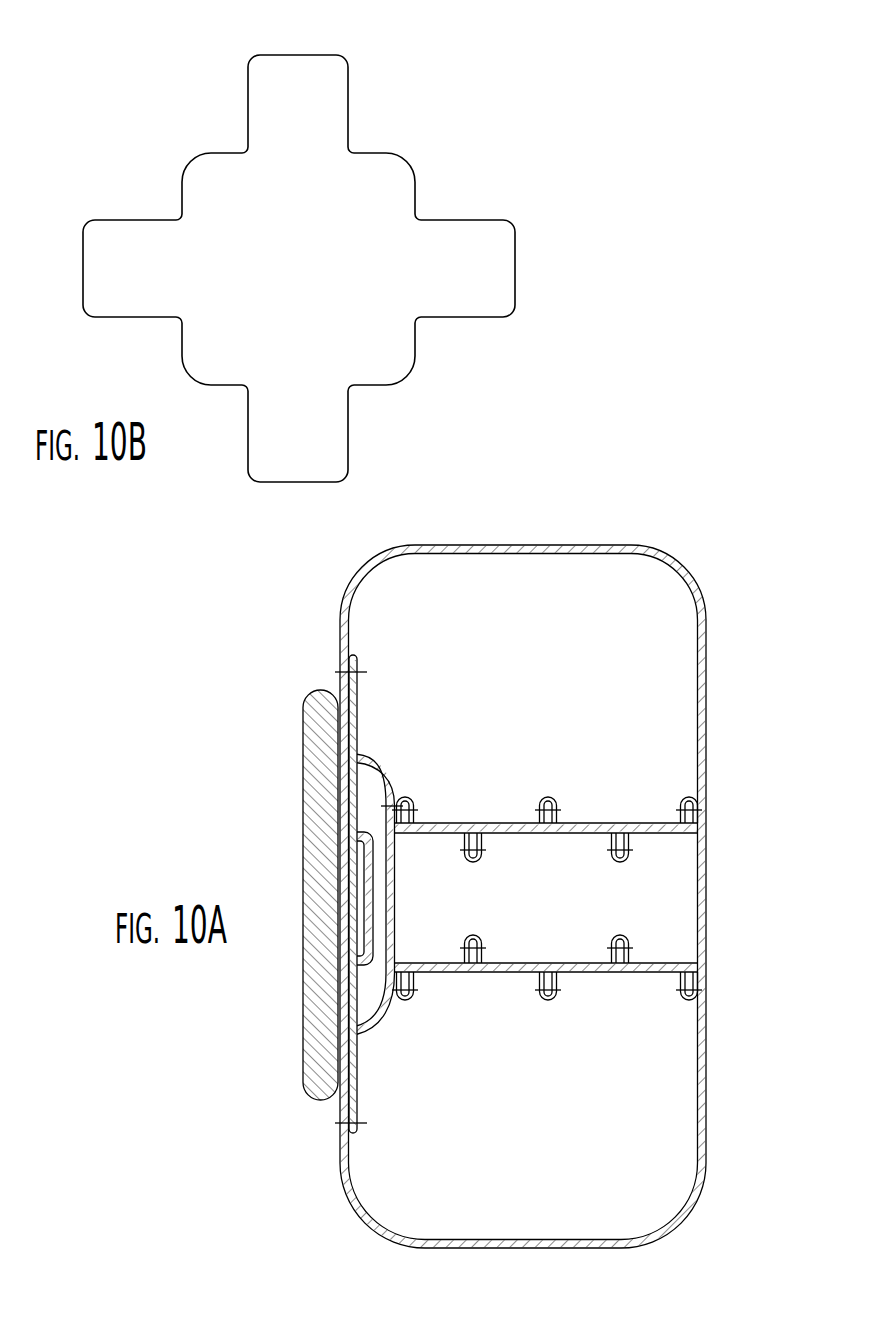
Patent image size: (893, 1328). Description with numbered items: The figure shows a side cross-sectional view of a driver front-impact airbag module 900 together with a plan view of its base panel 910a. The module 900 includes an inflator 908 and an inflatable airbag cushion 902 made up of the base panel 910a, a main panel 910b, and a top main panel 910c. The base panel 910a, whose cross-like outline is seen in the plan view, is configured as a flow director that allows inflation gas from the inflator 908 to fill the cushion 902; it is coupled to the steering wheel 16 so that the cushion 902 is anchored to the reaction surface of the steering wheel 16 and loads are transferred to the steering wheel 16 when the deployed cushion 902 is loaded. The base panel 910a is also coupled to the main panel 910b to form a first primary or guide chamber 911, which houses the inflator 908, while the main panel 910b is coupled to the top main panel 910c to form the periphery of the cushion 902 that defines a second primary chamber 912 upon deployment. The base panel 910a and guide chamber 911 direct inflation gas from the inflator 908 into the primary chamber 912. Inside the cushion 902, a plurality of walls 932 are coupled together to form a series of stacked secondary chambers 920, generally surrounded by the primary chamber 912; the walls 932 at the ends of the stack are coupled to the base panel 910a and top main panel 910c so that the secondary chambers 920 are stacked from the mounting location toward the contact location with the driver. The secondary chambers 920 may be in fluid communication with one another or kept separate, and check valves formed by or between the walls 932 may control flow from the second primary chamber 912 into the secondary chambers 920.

In FIG. 10A, the steering wheel 16 is at (303, 728).
In FIG. 10A, the driver airbag module 900 is at (651, 495).
In FIG. 10A, the airbag cushion 902 is at (690, 587).
In FIG. 10A, the inflator 908 is at (353, 873).
In FIG. 10B, the base panel 910a is at (412, 173).
In FIG. 10A, the base panel 910a is at (378, 790).
In FIG. 10A, the main panel 910b is at (497, 546).
In FIG. 10A, the top main panel 910c is at (706, 1103).
In FIG. 10A, the guide chamber 911 is at (353, 997).
In FIG. 10A, the second primary chamber 912 is at (543, 633).
In FIG. 10A, the secondary chambers 920 is at (422, 903).
In FIG. 10A, the walls 932 is at (440, 823).